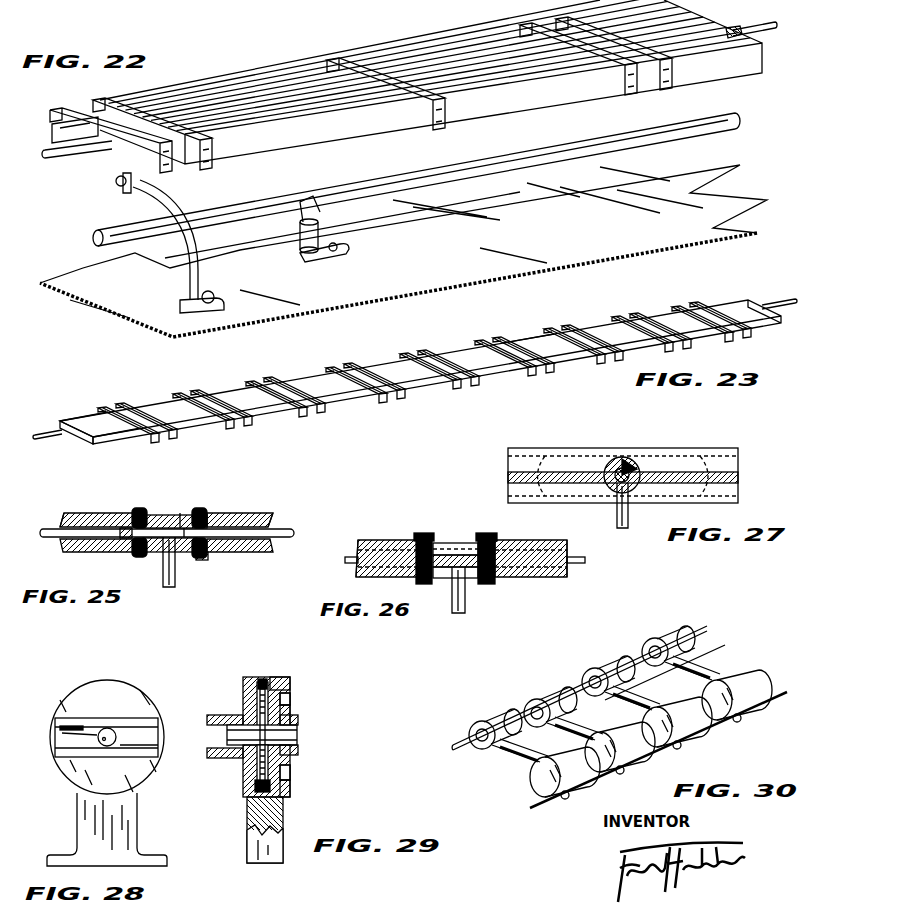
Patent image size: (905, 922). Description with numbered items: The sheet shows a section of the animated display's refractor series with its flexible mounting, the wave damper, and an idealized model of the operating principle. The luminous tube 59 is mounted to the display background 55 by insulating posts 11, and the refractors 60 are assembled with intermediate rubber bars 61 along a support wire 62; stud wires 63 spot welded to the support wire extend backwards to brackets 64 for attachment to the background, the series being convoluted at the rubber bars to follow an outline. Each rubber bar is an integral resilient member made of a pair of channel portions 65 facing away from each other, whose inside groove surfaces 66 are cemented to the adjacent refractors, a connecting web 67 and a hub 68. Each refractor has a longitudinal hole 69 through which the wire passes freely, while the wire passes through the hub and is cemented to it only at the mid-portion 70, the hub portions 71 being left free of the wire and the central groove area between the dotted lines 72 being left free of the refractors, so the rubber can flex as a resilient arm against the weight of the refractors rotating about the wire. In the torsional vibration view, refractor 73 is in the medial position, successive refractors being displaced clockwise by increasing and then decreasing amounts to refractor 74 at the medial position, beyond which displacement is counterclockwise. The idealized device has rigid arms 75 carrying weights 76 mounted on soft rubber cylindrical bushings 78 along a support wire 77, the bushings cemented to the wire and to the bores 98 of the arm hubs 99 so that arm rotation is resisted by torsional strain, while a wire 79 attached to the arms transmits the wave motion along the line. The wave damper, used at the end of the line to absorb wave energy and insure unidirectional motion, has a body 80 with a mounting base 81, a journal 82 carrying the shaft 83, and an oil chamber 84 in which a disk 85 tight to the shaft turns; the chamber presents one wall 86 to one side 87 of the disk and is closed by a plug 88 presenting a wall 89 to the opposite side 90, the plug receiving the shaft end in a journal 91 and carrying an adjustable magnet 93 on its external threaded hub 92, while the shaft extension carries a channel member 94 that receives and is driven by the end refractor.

In FIG. 22, the insulating posts 11 is at (341, 228).
In FIG. 22, the sheet 55 is at (740, 170).
In FIG. 22, the luminous tube 59 is at (527, 160).
In FIG. 22, the refractors 60 is at (272, 84).
In FIG. 23, the refractors 60 is at (176, 400).
In FIG. 25, the refractors 60 is at (97, 515).
In FIG. 26, the refractors 60 is at (380, 542).
In FIG. 22, the rubber bars 61 is at (338, 68).
In FIG. 23, the rubber bars 61 is at (557, 332).
In FIG. 25, the rubber bars 61 is at (177, 513).
In FIG. 26, the rubber bars 61 is at (480, 533).
In FIG. 27, the rubber bars 61 is at (523, 467).
In FIG. 22, the support wire 62 is at (60, 160).
In FIG. 23, the support wire 62 is at (37, 437).
In FIG. 25, the support wire 62 is at (293, 530).
In FIG. 26, the support wire 62 is at (583, 560).
In FIG. 27, the support wire 62 is at (627, 462).
In FIG. 22, the stud wires 63 is at (119, 186).
In FIG. 25, the stud wires 63 is at (175, 573).
In FIG. 26, the stud wires 63 is at (464, 605).
In FIG. 27, the stud wires 63 is at (630, 517).
In FIG. 22, the brackets 64 is at (199, 262).
In FIG. 25, the channel portions 65 is at (138, 512).
In FIG. 26, the channel portions 65 is at (420, 532).
In FIG. 27, the channel portions 65 is at (703, 460).
In FIG. 25, the inside surfaces 66 is at (210, 517).
In FIG. 26, the inside surfaces 66 is at (422, 570).
In FIG. 26, the connecting web 67 is at (448, 565).
In FIG. 27, the connecting web 67 is at (563, 472).
In FIG. 25, the hub 68 is at (160, 515).
In FIG. 26, the hub 68 is at (447, 542).
In FIG. 27, the hub 68 is at (618, 460).
In FIG. 25, the longitudinal hole 69 is at (83, 515).
In FIG. 26, the longitudinal hole 69 is at (362, 570).
In FIG. 25, the mid-portion 70 is at (180, 513).
In FIG. 26, the mid-portion 70 is at (463, 552).
In FIG. 27, the mid-portion 70 is at (633, 463).
In FIG. 25, the hub portions 71 is at (183, 515).
In FIG. 22, the dotted lines 72 is at (52, 130).
In FIG. 25, the dotted lines 72 is at (130, 517).
In FIG. 26, the dotted lines 72 is at (408, 540).
In FIG. 27, the dotted lines 72 is at (675, 462).
In FIG. 23, the refractor 73 is at (95, 420).
In FIG. 23, the refractor 74 is at (545, 358).
In FIG. 30, the rigid arms 75 is at (707, 662).
In FIG. 30, the weights 76 is at (750, 678).
In FIG. 30, the support wire 77 is at (472, 733).
In FIG. 30, the cylindrical bushings 78 is at (587, 672).
In FIG. 30, the wire 79 is at (717, 723).
In FIG. 28, the body 80 is at (122, 700).
In FIG. 29, the body 80 is at (263, 677).
In FIG. 28, the mounting base 81 is at (128, 817).
In FIG. 29, the mounting base 81 is at (283, 817).
In FIG. 29, the journal 82 is at (245, 718).
In FIG. 28, the shaft 83 is at (100, 740).
In FIG. 29, the shaft 83 is at (218, 723).
In FIG. 29, the oil chamber 84 is at (257, 678).
In FIG. 29, the disk 85 is at (290, 680).
In FIG. 29, the wall 86 is at (252, 777).
In FIG. 29, the side of the disk 87 is at (247, 792).
In FIG. 29, the plug 88 is at (290, 703).
In FIG. 29, the wall 89 is at (290, 772).
In FIG. 29, the opposite side of the disk 90 is at (290, 782).
In FIG. 29, the journal 91 is at (298, 748).
In FIG. 29, the external threaded hub 92 is at (298, 720).
In FIG. 29, the magnet 93 is at (290, 697).
In FIG. 28, the channel member 94 is at (102, 720).
In FIG. 29, the channel member 94 is at (213, 758).
In FIG. 30, the bores 98 is at (547, 700).
In FIG. 30, the arm hubs 99 is at (487, 720).